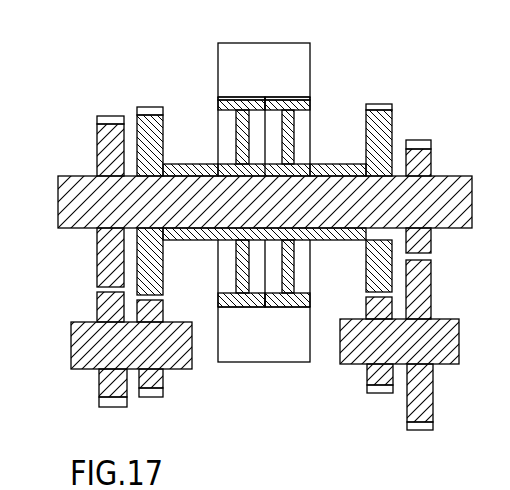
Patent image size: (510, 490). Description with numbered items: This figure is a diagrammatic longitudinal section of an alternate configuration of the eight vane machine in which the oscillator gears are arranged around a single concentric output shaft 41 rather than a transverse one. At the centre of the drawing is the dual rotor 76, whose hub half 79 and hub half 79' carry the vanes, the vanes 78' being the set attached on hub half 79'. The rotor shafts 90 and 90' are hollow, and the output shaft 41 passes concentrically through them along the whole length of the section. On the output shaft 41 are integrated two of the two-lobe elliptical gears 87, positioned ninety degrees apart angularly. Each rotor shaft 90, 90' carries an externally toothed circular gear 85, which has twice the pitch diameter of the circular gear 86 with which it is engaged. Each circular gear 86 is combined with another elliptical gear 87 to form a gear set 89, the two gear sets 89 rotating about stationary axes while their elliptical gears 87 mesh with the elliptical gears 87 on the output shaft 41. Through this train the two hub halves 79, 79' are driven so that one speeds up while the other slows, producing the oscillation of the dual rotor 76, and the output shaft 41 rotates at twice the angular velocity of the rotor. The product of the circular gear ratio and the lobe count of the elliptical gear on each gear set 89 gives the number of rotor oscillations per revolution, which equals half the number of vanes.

The output shaft 41 is at (76, 231).
The dual rotor 76 is at (267, 199).
The vanes 78' is at (284, 219).
The hub half 79 is at (224, 195).
The hub half 79' is at (306, 195).
The circular gear 85 is at (148, 107).
The circular gear 86 is at (161, 391).
The two-lobe elliptical gear 87 is at (98, 132).
The gear set 89 is at (97, 380).
The rotor shaft 90 is at (264, 189).
The rotor shaft 90' is at (292, 156).